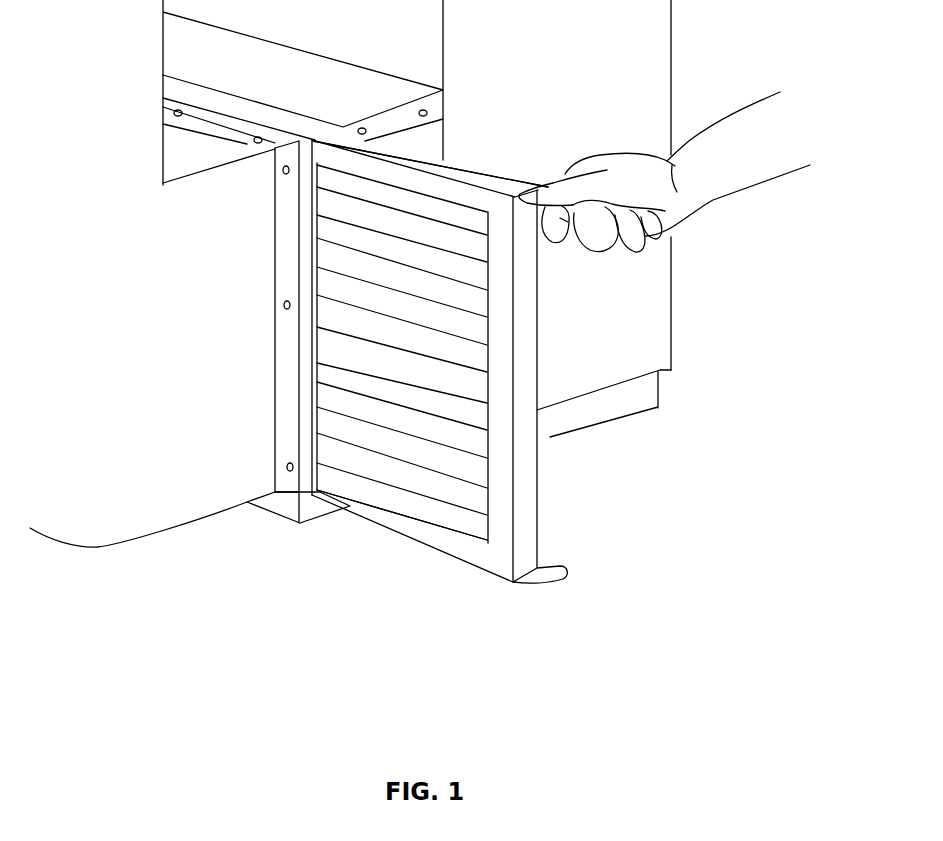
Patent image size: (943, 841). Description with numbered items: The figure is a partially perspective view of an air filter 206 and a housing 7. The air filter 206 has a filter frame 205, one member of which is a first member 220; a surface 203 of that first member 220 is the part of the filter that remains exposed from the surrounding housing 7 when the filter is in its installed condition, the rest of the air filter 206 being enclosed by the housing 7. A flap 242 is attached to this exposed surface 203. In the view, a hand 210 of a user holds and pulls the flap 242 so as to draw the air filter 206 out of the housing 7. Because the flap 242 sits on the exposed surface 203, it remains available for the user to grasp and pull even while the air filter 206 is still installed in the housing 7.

The housing 7 is at (182, 92).
The flap 242 is at (546, 193).
The surface 203 is at (523, 503).
The first member 220 is at (527, 542).
The filter frame 205 is at (453, 540).
The air filter 206 is at (403, 560).
The hand 210 is at (746, 220).